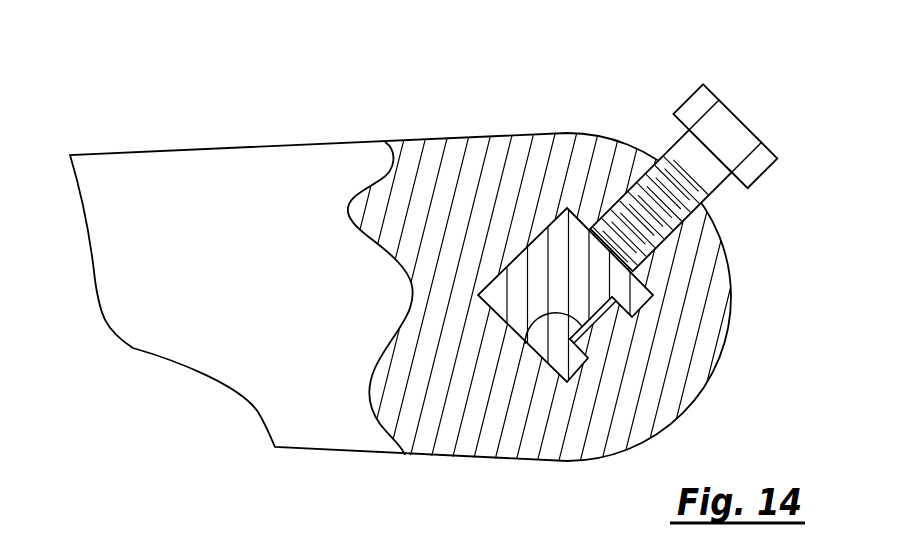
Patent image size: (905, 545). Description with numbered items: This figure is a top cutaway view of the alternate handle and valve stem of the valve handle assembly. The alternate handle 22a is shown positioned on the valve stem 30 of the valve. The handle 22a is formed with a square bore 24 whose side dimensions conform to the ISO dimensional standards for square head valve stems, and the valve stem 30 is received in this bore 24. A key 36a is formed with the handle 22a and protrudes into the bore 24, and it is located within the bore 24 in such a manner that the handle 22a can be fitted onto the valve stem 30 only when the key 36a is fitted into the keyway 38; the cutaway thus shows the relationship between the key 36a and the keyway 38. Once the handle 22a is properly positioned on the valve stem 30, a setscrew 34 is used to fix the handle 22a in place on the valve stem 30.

The alternate handle 22a is at (227, 183).
The bore 24 is at (513, 262).
The valve stem 30 is at (555, 248).
The setscrew 34 is at (732, 131).
The key 36a is at (600, 322).
The keyway 38 is at (525, 343).